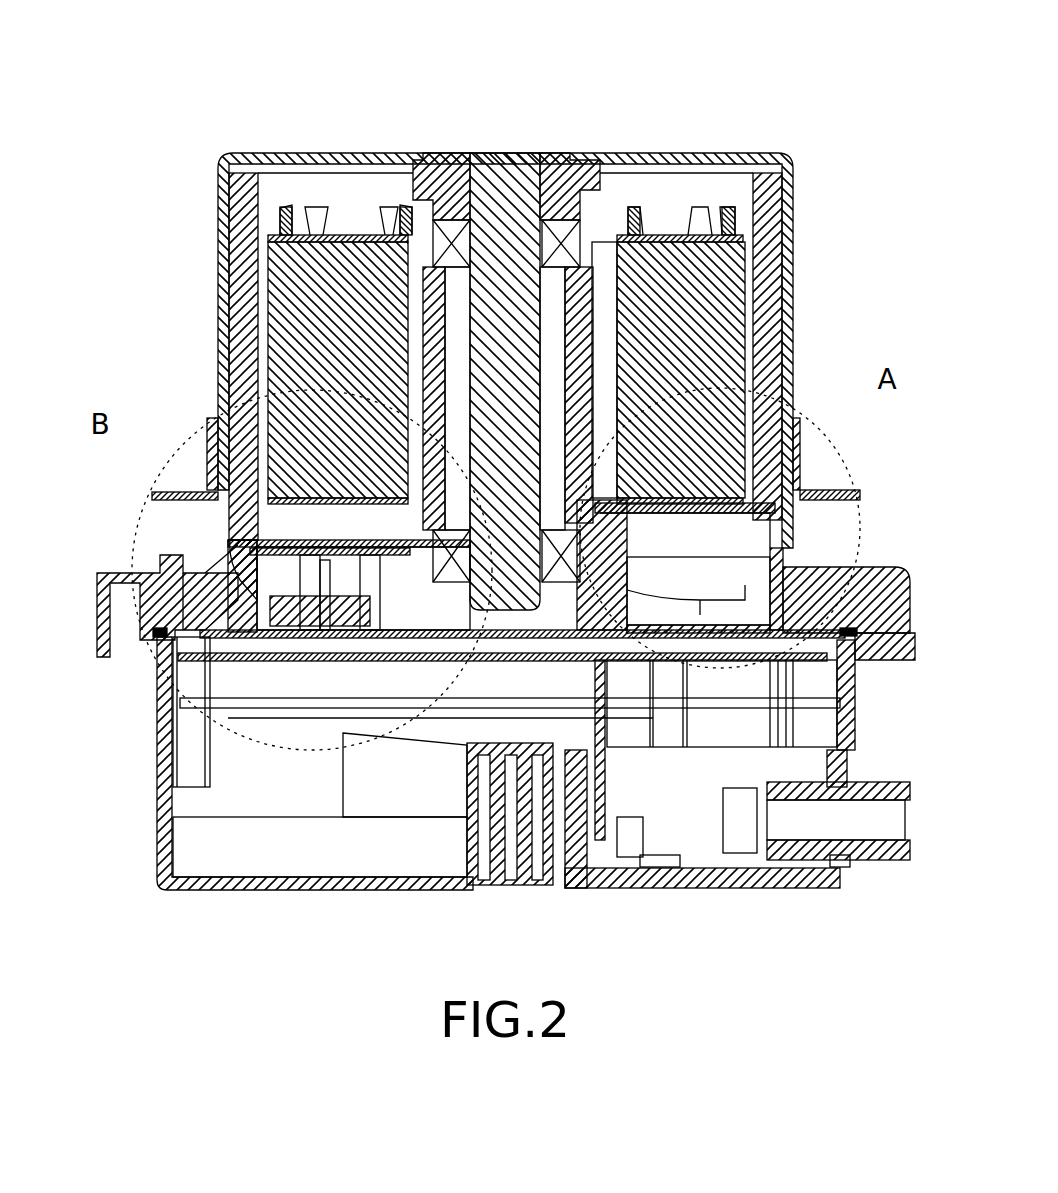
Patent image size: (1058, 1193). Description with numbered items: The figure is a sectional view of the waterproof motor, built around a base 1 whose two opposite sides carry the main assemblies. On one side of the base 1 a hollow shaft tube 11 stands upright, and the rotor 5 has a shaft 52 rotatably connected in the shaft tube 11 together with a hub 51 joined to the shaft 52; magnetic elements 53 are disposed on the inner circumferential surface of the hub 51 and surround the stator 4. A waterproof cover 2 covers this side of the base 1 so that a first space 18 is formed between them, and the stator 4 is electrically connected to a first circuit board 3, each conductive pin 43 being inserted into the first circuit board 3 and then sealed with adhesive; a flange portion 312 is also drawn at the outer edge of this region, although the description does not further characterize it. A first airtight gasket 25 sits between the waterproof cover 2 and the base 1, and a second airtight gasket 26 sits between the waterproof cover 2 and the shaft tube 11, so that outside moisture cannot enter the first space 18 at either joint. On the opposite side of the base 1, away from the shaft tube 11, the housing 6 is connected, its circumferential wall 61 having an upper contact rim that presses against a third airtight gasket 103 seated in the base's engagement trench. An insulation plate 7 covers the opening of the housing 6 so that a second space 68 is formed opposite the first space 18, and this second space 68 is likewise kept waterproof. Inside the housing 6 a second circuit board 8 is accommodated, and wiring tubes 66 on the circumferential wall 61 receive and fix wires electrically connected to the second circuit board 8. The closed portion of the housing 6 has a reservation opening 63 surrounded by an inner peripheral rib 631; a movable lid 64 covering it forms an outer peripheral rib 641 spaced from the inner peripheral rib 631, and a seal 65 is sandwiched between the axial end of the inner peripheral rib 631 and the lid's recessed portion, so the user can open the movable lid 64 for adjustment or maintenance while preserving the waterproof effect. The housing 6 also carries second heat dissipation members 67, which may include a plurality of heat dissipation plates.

The base 1 is at (100, 585).
The waterproof cover 2 is at (260, 520).
The first circuit board 3 is at (250, 540).
The stator 4 is at (262, 225).
The rotor 5 is at (403, 311).
The housing 6 is at (502, 810).
The insulation plate 7 is at (262, 620).
The second circuit board 8 is at (210, 688).
The shaft tube 11 is at (430, 330).
The first space 18 is at (765, 583).
The first airtight gasket 25 is at (230, 548).
The second airtight gasket 26 is at (430, 395).
The conductive pin 43 is at (760, 540).
The hub 51 is at (403, 319).
The shaft 52 is at (502, 153).
The magnetic elements 53 is at (770, 290).
The circumferential wall 61 is at (160, 760).
The reservation opening 63 is at (625, 857).
The movable lid 64 is at (760, 870).
The seal 65 is at (710, 860).
The wiring tube 66 is at (880, 782).
The second heat dissipation members 67 is at (490, 875).
The second space 68 is at (815, 690).
The third airtight gasket 103 is at (155, 637).
The flange 312 is at (840, 490).
The inner peripheral rib 631 is at (820, 867).
The outer peripheral rib 641 is at (875, 860).